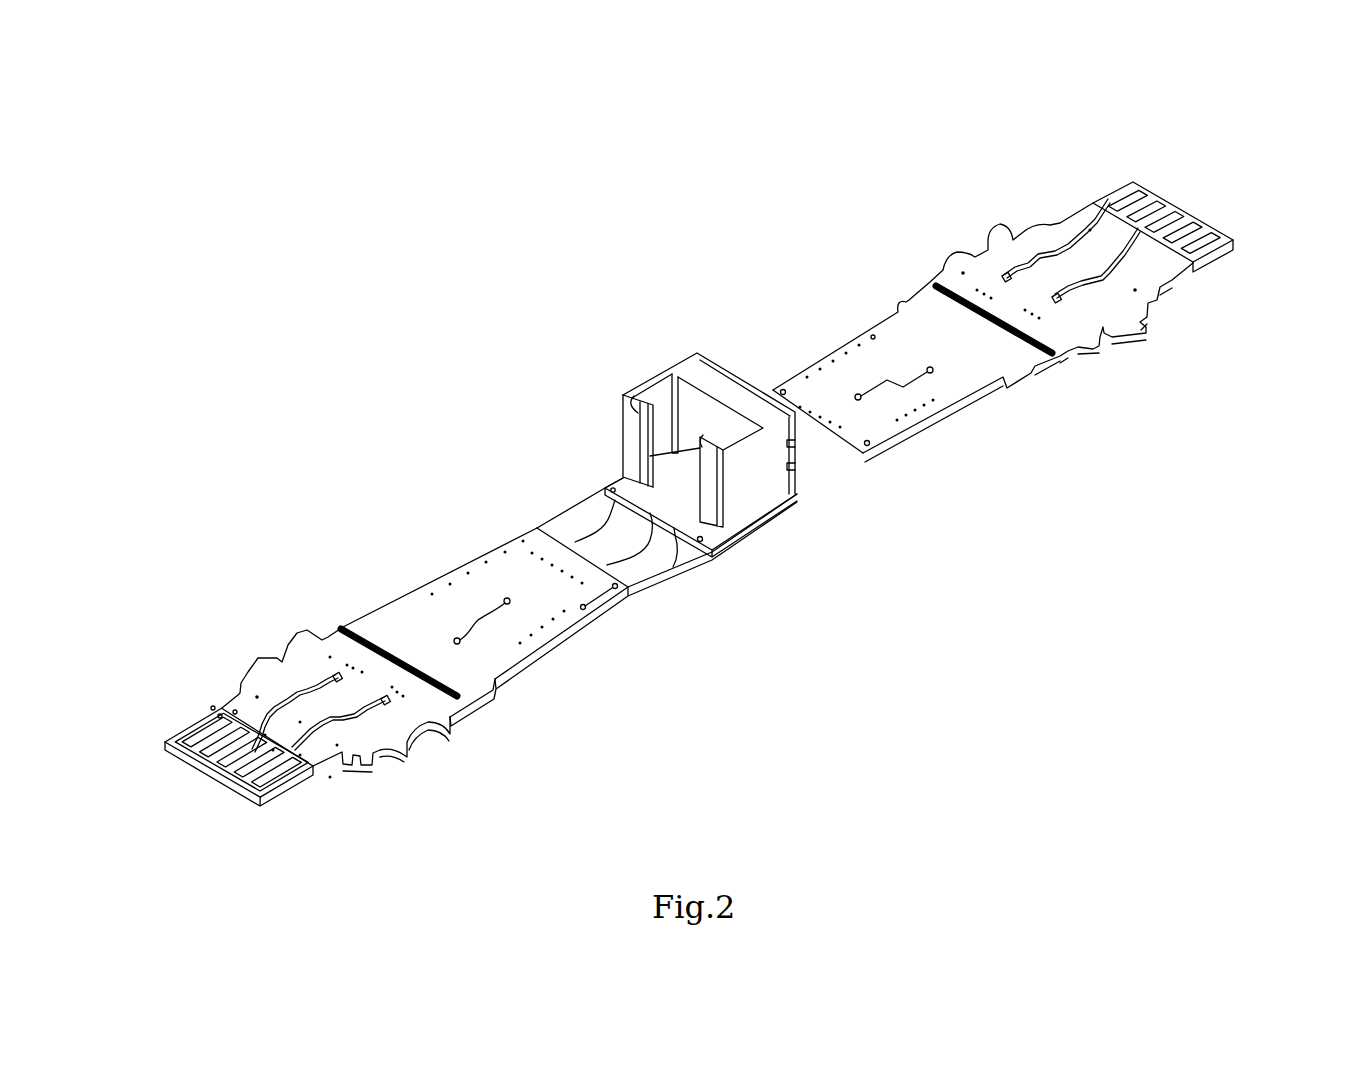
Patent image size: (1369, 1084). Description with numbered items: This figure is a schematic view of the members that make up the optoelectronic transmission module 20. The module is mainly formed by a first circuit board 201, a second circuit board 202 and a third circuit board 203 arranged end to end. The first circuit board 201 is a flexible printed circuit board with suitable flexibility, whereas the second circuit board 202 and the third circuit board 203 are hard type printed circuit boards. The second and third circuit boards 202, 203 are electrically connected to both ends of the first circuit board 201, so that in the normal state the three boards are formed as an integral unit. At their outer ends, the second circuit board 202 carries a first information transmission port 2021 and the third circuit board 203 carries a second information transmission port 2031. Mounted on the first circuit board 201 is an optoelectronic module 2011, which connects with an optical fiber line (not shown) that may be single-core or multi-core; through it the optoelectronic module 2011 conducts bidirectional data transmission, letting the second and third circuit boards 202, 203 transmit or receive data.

The optoelectronic transmission module 20 is at (487, 303).
The first circuit board 201 is at (678, 548).
The optoelectronic module 2011 is at (732, 383).
The second circuit board 202 is at (373, 622).
The first information transmission port 2021 is at (223, 770).
The third circuit board 203 is at (1020, 243).
The second information transmission port 2031 is at (1183, 213).